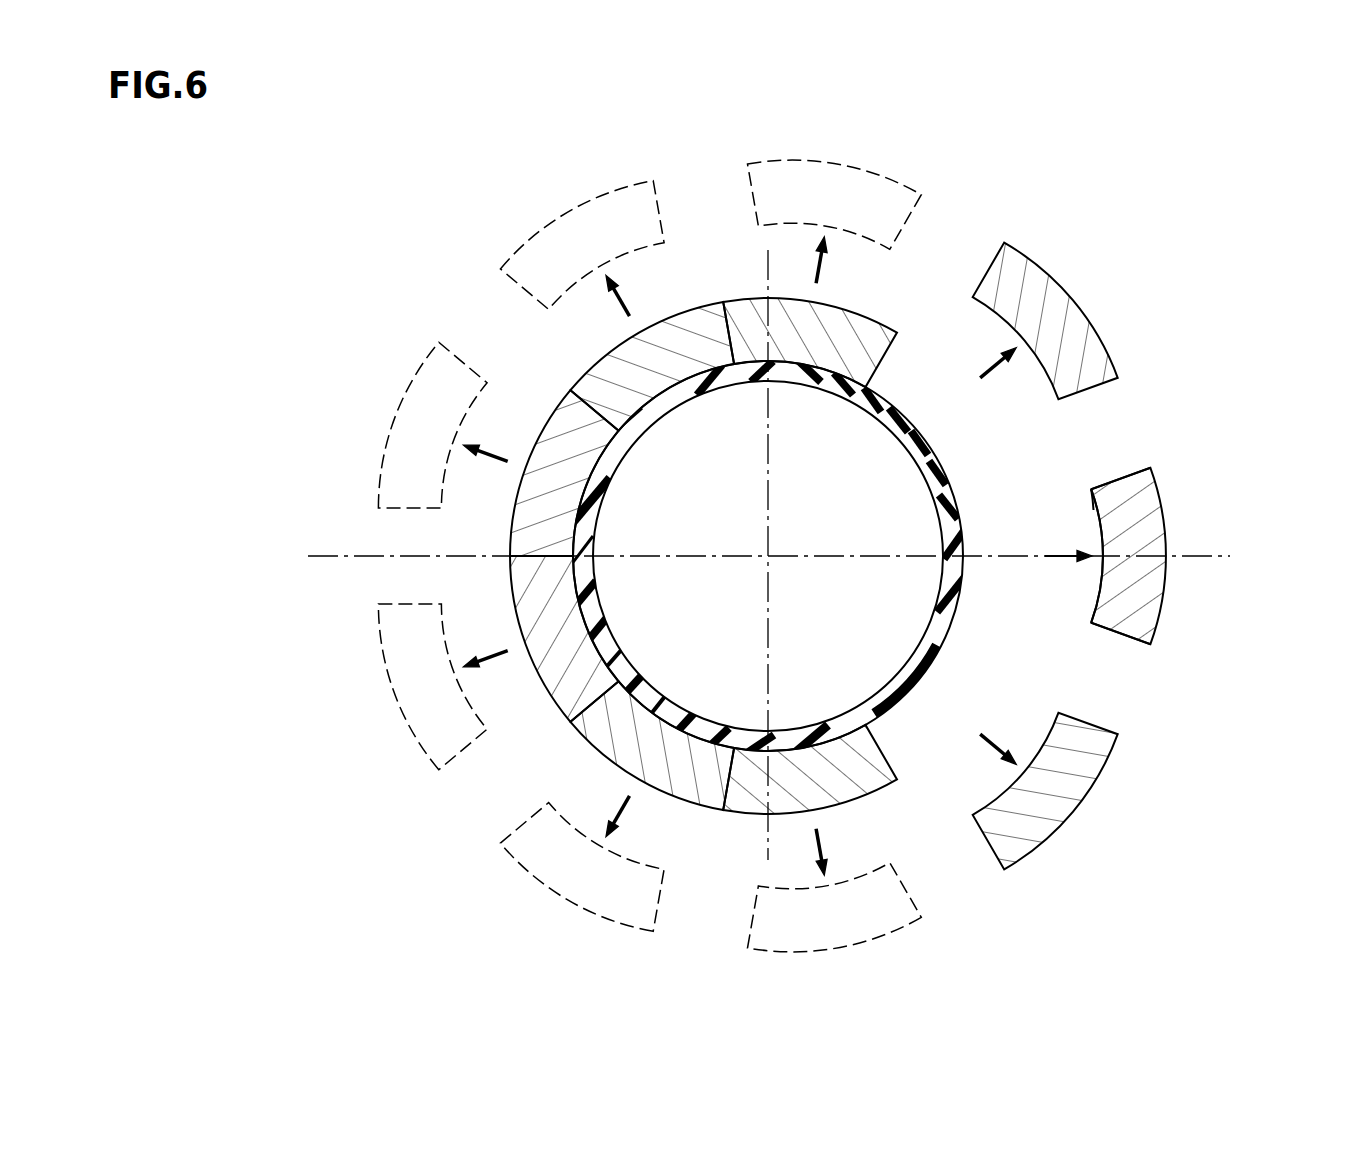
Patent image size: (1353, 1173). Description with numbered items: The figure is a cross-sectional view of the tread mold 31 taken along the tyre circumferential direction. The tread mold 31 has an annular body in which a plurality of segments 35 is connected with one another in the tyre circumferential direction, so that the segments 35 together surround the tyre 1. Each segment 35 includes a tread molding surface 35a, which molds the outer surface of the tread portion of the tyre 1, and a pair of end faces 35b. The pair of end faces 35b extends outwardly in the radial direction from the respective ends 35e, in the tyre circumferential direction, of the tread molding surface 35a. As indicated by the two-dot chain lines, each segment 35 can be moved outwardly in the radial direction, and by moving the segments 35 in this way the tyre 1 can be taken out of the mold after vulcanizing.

The tyre 1 is at (887, 407).
The tread mold 31 is at (741, 290).
The segment 35 is at (521, 249).
The tread molding surface 35a is at (1098, 580).
The end face 35b is at (1120, 478).
The end 35e is at (1098, 488).